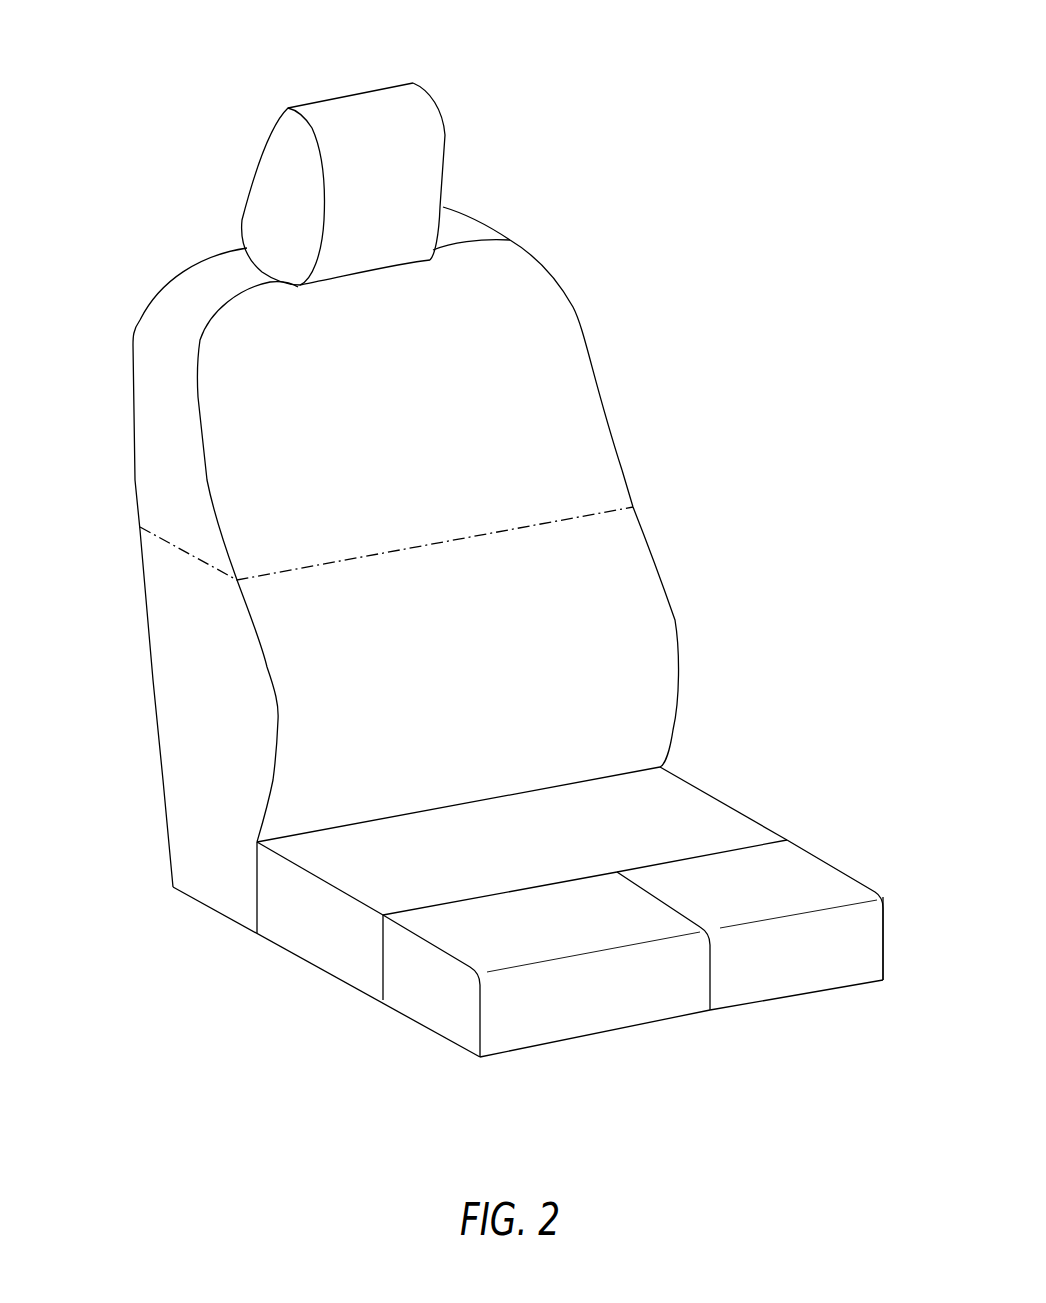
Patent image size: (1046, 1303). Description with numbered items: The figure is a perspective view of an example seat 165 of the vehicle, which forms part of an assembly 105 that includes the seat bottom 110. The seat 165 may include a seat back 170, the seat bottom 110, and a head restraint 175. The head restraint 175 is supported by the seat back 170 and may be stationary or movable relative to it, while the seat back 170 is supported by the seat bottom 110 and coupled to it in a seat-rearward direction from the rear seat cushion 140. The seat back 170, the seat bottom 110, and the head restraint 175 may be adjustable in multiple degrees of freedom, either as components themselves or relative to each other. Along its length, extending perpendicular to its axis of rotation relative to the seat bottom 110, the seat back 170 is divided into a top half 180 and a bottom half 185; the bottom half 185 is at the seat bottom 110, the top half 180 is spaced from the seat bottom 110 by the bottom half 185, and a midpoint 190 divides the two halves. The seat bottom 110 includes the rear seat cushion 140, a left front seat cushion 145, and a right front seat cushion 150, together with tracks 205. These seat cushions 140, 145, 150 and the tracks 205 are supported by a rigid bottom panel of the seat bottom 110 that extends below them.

The assembly 105 is at (222, 1012).
The seat bottom 110 is at (892, 940).
The rear seat cushion 140 is at (737, 812).
The left front seat cushion 145 is at (837, 867).
The right front seat cushion 150 is at (522, 923).
The seat 165 is at (603, 90).
The seat back 170 is at (595, 382).
The head restraint 175 is at (317, 102).
The top half 180 is at (133, 458).
The bottom half 185 is at (153, 698).
The midpoint 190 is at (180, 552).
The tracks 205 is at (662, 767).